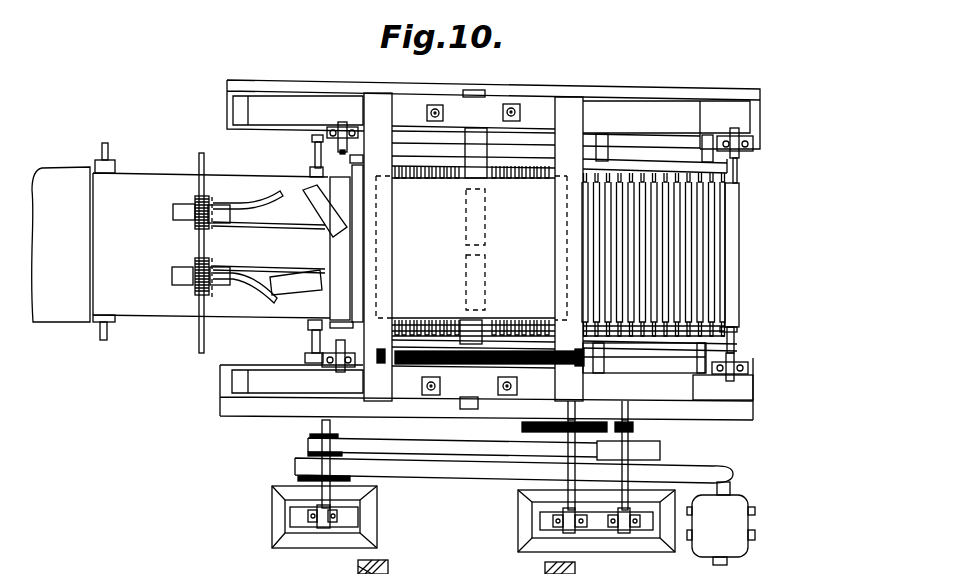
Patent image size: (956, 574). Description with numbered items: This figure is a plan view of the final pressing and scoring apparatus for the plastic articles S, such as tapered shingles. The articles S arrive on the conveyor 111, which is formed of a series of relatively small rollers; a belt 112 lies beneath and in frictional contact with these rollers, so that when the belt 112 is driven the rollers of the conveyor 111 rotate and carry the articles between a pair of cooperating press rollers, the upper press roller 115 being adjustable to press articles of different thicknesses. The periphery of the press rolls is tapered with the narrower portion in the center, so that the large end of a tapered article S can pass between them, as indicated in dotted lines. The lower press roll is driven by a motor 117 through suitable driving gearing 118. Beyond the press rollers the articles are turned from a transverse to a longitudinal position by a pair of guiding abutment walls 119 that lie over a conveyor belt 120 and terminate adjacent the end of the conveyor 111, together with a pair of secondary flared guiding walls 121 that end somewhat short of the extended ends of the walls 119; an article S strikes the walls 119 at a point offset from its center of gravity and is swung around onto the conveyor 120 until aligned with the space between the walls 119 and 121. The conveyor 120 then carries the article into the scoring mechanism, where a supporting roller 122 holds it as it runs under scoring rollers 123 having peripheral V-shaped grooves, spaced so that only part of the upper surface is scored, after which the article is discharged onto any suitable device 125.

The conveyor 111 is at (687, 238).
The belt 112 is at (735, 340).
The press roller 115 is at (473, 255).
The motor 117 is at (737, 505).
The driving gearing 118 is at (522, 427).
The guiding abutment walls 119 is at (293, 226).
The conveyor belt 120 is at (152, 180).
The secondary flared guiding walls 121 is at (255, 197).
The roller 122 is at (213, 260).
The scoring rollers 123 is at (193, 227).
The device 125 is at (61, 244).
The articles S is at (317, 198).